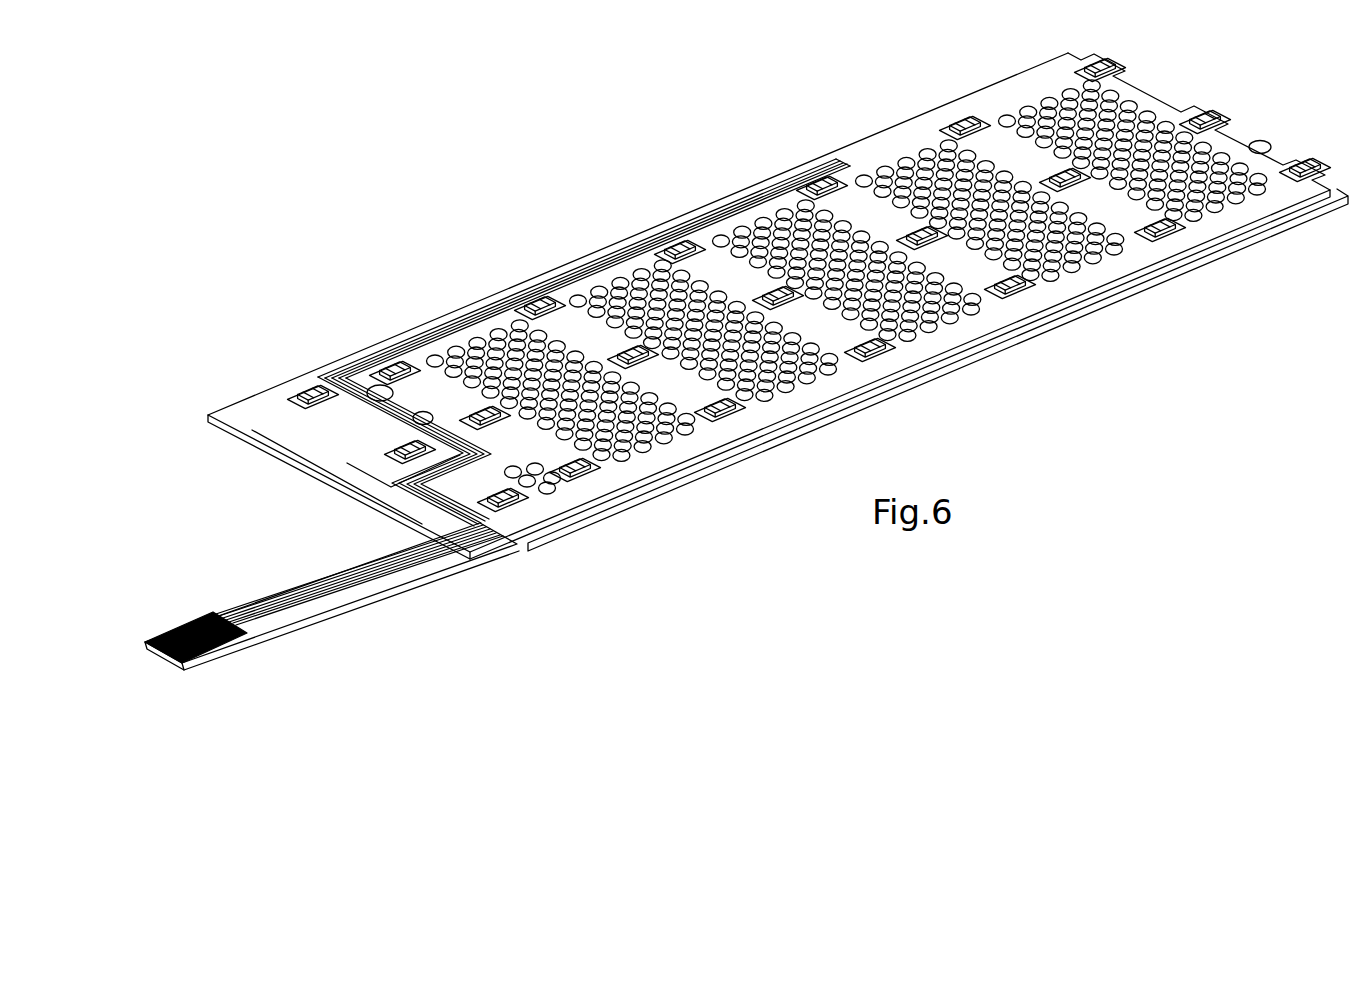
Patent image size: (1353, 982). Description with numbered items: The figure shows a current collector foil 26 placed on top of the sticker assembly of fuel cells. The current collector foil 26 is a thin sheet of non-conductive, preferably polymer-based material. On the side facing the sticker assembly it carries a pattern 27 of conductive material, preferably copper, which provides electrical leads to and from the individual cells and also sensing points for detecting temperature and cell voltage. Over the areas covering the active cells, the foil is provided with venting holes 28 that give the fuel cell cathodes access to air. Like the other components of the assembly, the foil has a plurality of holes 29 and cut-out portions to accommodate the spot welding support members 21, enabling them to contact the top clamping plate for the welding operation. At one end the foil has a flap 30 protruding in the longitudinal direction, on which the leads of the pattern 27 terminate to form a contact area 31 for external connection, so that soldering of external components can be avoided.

The spot welding support member 21 is at (835, 190).
The current collector foil 26 is at (625, 250).
The pattern of conductive material 27 is at (348, 373).
The venting holes 28 is at (472, 345).
The holes 29 is at (815, 180).
The flap 30 is at (330, 627).
The contact area 31 is at (176, 608).